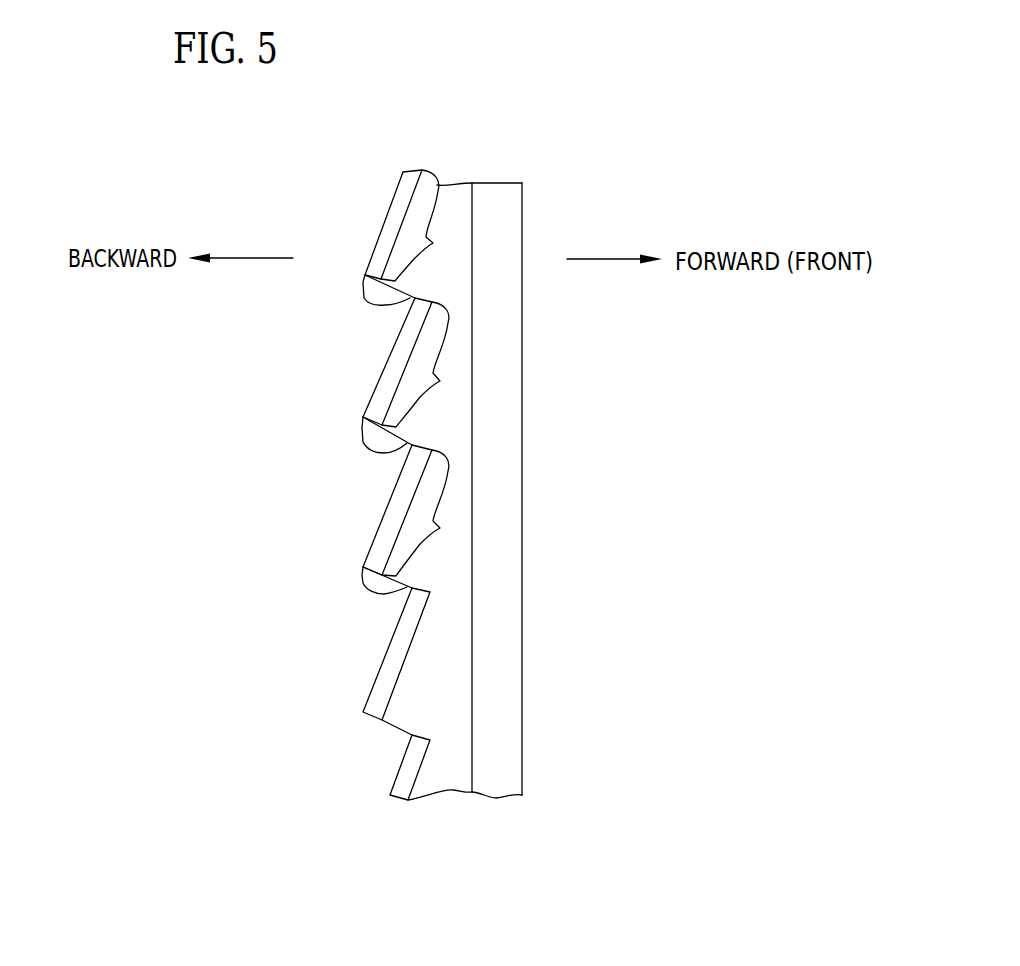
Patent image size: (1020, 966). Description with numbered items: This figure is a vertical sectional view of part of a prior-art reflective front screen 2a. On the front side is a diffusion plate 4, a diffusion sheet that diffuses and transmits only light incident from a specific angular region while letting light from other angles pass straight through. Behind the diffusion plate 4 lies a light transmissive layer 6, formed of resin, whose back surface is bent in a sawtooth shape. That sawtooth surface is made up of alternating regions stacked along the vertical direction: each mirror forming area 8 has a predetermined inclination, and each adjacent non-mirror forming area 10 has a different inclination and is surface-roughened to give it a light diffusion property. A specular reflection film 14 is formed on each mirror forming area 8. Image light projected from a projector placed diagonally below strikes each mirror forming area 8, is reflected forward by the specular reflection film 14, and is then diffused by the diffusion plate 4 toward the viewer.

The reflective front screen 2a is at (563, 554).
The diffusion plate 4 is at (498, 725).
The light transmissive layer 6 is at (450, 732).
The mirror forming area 8 is at (421, 373).
The non-mirror forming area 10 is at (383, 304).
The specular reflection film 14 is at (396, 222).